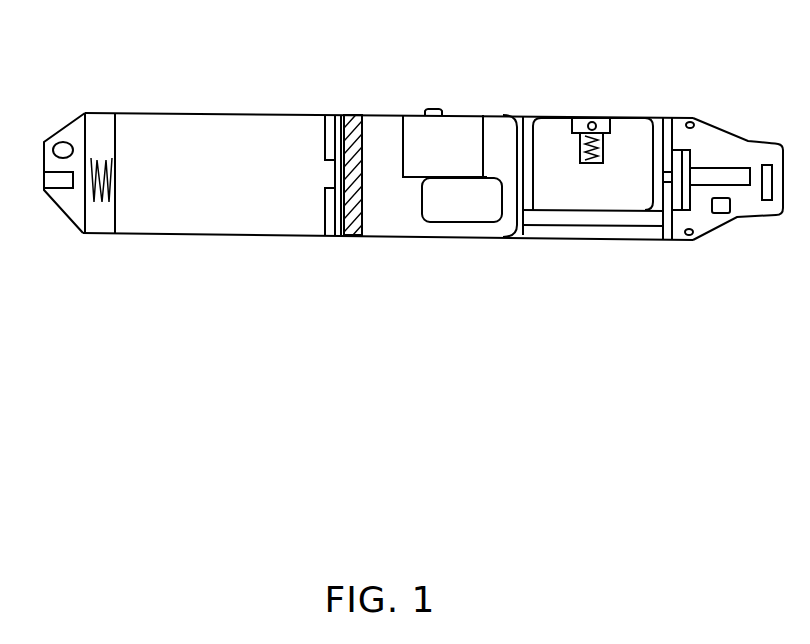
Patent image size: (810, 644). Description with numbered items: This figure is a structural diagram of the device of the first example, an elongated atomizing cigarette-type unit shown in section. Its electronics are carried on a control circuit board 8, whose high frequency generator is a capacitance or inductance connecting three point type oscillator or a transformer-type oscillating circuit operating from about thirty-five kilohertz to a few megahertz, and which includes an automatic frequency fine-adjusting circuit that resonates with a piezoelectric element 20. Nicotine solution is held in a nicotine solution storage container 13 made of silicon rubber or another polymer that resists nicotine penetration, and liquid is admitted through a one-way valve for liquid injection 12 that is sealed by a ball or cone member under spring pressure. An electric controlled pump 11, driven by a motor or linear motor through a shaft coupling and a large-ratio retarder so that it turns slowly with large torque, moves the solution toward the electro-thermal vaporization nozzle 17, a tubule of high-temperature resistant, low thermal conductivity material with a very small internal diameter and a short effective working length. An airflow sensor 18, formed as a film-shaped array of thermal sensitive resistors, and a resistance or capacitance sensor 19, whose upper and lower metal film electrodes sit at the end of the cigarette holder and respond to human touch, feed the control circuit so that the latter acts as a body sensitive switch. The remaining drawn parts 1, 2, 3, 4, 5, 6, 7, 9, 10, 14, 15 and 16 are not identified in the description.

The end cap 1 is at (73, 203).
The slot 2 is at (45, 188).
The attachment hole 3 is at (64, 142).
The spring 4 is at (101, 218).
The housing body 5 is at (214, 218).
The housing wall 6 is at (207, 112).
The seal 7 is at (350, 237).
The control circuit board 8 is at (384, 130).
The button 9 is at (443, 102).
The battery 10 is at (460, 207).
The electric controlled pump 11 is at (462, 148).
The one-way valve for liquid injection 12 is at (592, 122).
The nicotine solution storage container 13 is at (571, 195).
The platform 14 is at (598, 228).
The partition 15 is at (673, 147).
The end housing 16 is at (693, 118).
The electro-thermal vaporization nozzle 17 is at (710, 167).
The airflow sensor 18 is at (718, 213).
The resistance or capacitance sensor 19 is at (767, 217).
The piezoelectric element 20 is at (685, 198).